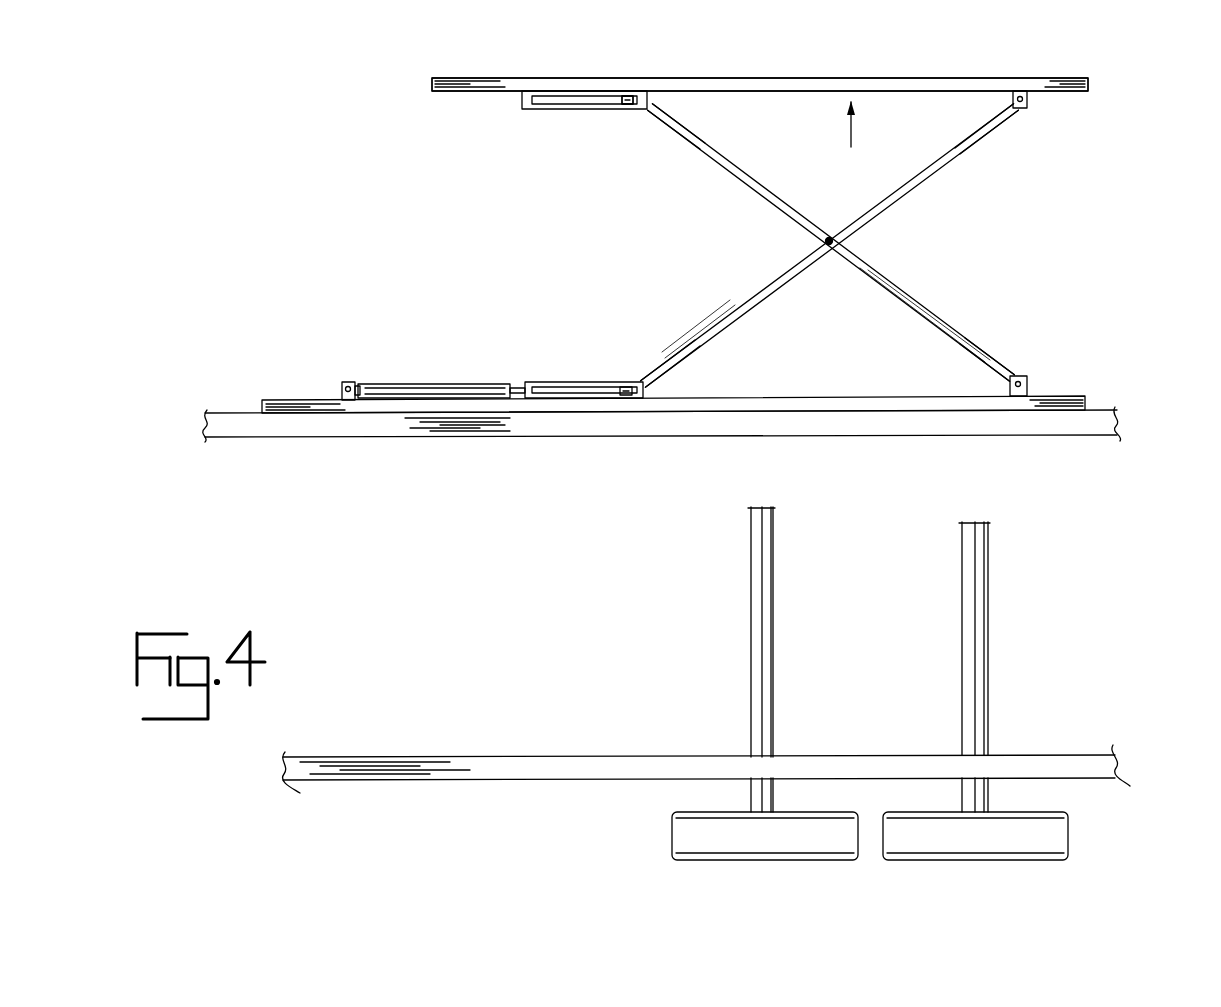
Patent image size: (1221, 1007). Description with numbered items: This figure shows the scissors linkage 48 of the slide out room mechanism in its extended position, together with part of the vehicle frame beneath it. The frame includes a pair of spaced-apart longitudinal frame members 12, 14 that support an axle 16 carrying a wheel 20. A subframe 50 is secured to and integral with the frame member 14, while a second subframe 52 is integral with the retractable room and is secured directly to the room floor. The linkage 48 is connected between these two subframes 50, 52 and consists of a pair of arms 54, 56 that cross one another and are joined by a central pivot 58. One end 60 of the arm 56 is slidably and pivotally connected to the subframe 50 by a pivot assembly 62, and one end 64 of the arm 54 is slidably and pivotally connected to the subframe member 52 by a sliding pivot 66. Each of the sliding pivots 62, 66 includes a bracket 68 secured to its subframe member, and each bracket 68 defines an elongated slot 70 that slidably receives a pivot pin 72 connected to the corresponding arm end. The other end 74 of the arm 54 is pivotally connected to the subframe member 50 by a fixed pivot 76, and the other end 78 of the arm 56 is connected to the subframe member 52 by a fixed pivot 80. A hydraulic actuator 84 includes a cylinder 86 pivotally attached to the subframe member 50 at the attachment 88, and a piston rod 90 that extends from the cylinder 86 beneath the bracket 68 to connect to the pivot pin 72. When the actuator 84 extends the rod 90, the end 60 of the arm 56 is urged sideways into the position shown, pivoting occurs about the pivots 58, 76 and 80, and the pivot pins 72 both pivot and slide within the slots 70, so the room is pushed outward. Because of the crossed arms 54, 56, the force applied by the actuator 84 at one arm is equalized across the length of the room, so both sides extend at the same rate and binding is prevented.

The frame member 12 is at (1072, 760).
The frame member 14 is at (875, 419).
The axle 16 is at (762, 615).
The wheel 20 is at (700, 845).
The linkage 48 is at (1036, 206).
The subframe 50 is at (784, 398).
The subframe 52 is at (845, 80).
The arm 54 is at (727, 175).
The arm 56 is at (900, 195).
The pivot 58 is at (828, 238).
The end of arm 56 60 is at (655, 365).
The pivot assembly 62 is at (549, 380).
The end of arm 54 64 is at (657, 117).
The sliding pivot 66 is at (634, 91).
The bracket 68 is at (524, 108).
The elongated slot 70 is at (567, 104).
The pivot pin 72 is at (622, 98).
The end of arm 54 74 is at (985, 350).
The fixed pivot 76 is at (1028, 386).
The end of arm 56 78 is at (975, 133).
The fixed pivot 80 is at (1028, 97).
The hydraulic actuator 84 is at (433, 378).
The cylinder 86 is at (395, 390).
The pivotal attachment 88 is at (345, 383).
The piston rod 90 is at (515, 388).